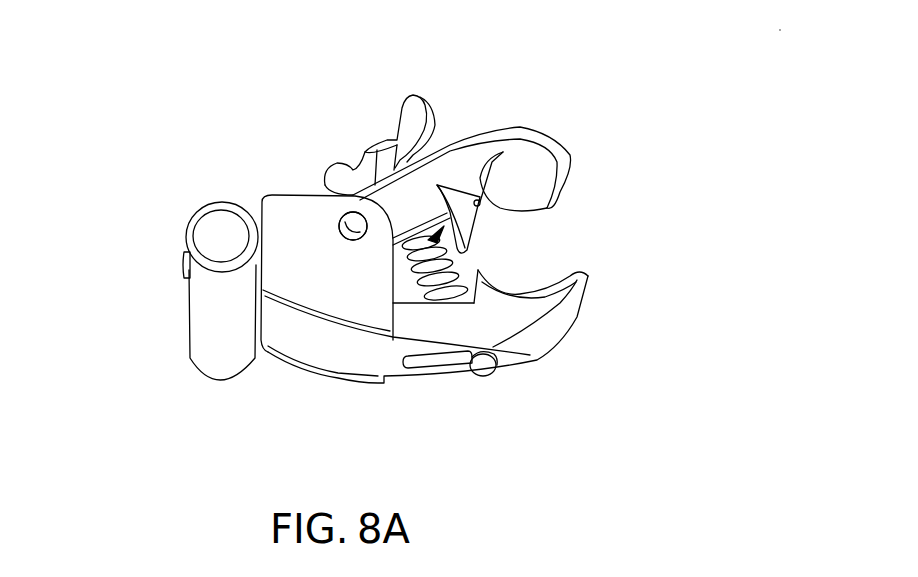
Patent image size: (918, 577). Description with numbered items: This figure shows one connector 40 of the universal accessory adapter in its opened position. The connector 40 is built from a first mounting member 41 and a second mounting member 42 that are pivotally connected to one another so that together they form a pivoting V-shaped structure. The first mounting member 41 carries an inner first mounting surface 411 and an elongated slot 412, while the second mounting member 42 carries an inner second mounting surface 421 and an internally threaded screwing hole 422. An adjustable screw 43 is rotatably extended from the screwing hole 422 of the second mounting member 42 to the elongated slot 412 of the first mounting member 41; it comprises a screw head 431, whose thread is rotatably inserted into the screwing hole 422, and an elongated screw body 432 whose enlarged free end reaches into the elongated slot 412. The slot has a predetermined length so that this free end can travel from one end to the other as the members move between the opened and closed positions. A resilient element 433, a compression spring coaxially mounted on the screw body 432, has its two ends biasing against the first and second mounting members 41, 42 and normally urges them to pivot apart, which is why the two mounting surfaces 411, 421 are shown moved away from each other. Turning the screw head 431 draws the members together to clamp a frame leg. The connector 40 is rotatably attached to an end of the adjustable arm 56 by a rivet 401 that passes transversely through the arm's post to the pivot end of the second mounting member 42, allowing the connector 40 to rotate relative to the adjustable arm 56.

The connector 40 is at (718, 154).
The first mounting member 41 is at (328, 352).
The rivet 401 is at (187, 268).
The inner first mounting surface 411 is at (522, 292).
The elongated slot 412 is at (446, 358).
The second mounting member 42 is at (445, 165).
The inner second mounting surface 421 is at (523, 178).
The screwing hole 422 is at (478, 200).
The adjustable screw 43 is at (320, 66).
The screw head 431 is at (365, 130).
The screw body 432 is at (492, 372).
The resilient element 433 is at (474, 303).
The adjustable arm 56 is at (213, 352).